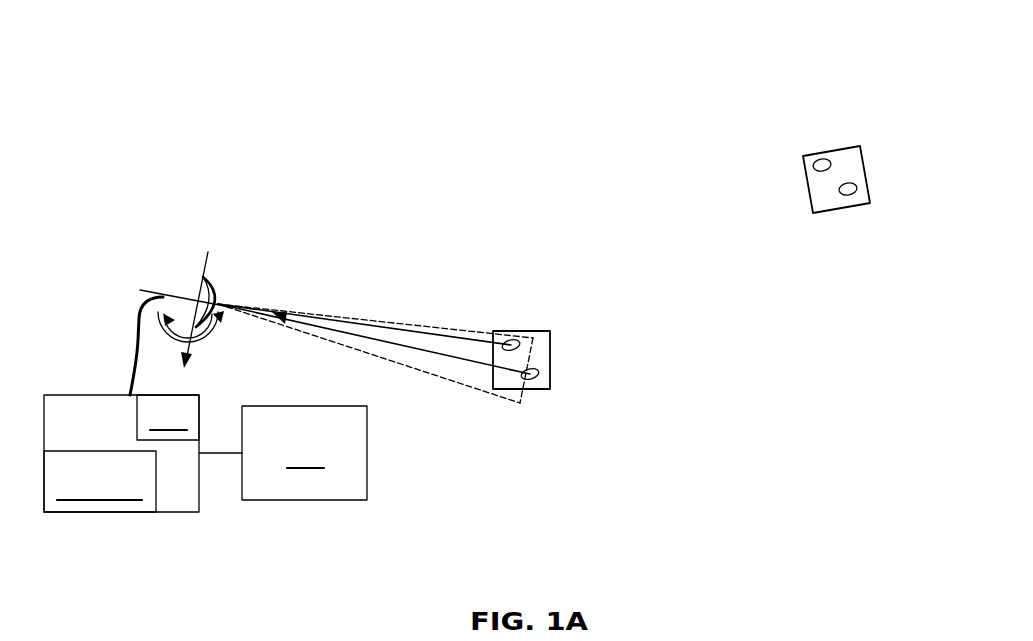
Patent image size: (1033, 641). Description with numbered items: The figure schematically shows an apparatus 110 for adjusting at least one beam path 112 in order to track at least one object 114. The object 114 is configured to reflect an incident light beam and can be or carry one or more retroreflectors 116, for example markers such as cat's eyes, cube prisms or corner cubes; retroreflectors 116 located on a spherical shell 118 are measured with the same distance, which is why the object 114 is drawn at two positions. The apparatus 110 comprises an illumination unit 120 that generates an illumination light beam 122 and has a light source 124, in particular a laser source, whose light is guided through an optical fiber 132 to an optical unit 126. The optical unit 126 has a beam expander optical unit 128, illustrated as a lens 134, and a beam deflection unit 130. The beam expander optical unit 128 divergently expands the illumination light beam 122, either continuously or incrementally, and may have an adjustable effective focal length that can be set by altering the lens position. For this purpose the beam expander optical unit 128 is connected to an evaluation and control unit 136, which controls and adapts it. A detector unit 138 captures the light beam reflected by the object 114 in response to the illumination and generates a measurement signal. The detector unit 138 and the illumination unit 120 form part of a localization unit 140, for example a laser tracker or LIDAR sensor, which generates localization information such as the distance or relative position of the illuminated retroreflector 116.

The apparatus 110 is at (160, 137).
The beam path 112 is at (244, 237).
The object 114 is at (717, 269).
The retroreflector 116 is at (511, 340).
The spherical shell 118 is at (492, 455).
The illumination unit 120 is at (100, 481).
The illumination light beam 122 is at (455, 382).
The light source 124 is at (100, 481).
The optical unit 126 is at (205, 232).
The beam expander optical unit 128 is at (197, 237).
The beam deflection unit 130 is at (220, 276).
The optical fiber 132 is at (143, 340).
The lens 134 is at (181, 291).
The evaluation and control unit 136 is at (304, 453).
The detector unit 138 is at (168, 417).
The localization unit 140 is at (143, 489).